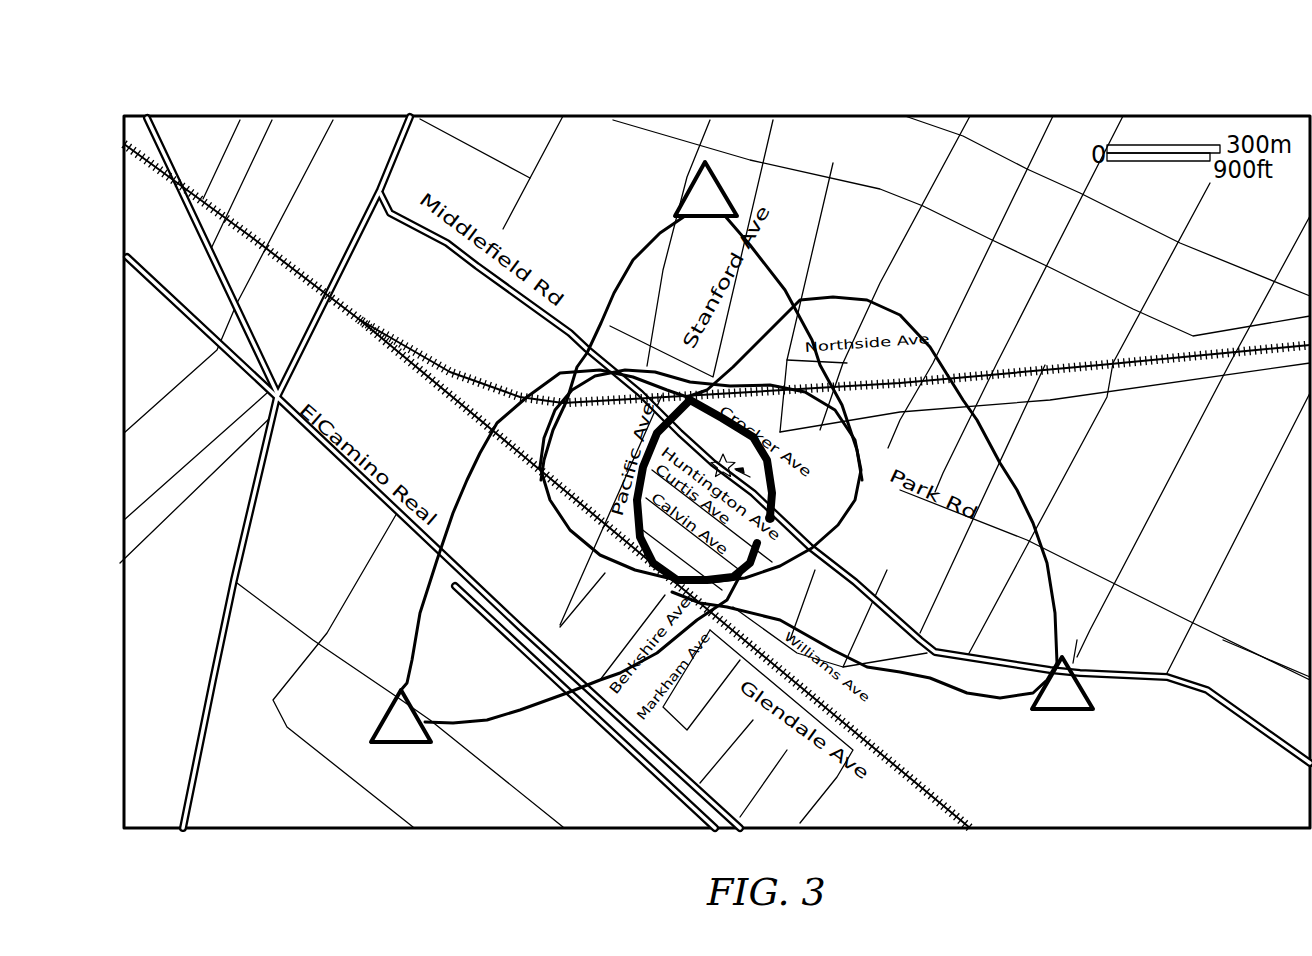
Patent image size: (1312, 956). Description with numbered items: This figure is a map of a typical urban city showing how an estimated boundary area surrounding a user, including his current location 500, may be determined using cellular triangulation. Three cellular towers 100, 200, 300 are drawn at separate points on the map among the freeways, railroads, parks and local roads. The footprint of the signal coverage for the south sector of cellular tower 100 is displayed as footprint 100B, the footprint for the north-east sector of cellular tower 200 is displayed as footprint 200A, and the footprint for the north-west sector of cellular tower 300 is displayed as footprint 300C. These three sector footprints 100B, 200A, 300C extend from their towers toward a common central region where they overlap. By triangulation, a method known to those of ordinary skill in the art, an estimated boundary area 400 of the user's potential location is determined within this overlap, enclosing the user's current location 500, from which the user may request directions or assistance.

The cellular tower 100 is at (664, 122).
The south sector coverage footprint of cellular tower 100 100B is at (744, 309).
The cellular tower 200 is at (465, 788).
The north-east sector coverage footprint of cellular tower 200 200A is at (546, 546).
The cellular tower 300 is at (1147, 773).
The north-west sector coverage footprint of cellular tower 300 300C is at (916, 497).
The estimated boundary area 400 is at (808, 561).
The current location 500 is at (847, 530).